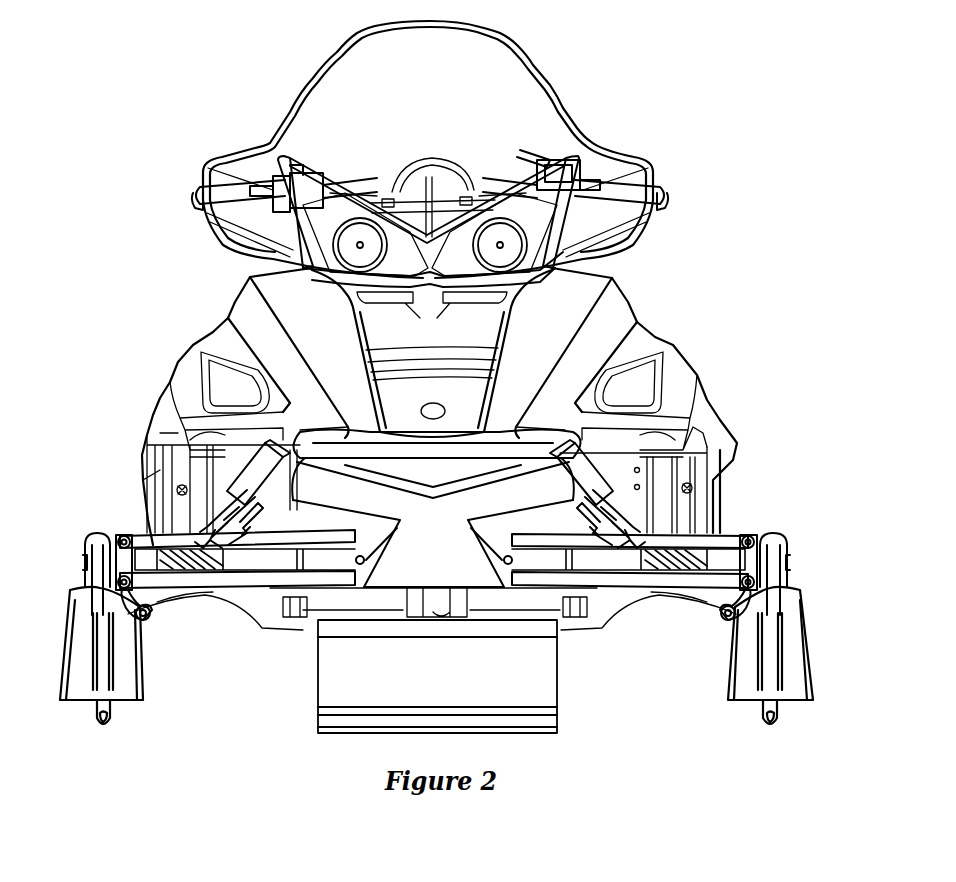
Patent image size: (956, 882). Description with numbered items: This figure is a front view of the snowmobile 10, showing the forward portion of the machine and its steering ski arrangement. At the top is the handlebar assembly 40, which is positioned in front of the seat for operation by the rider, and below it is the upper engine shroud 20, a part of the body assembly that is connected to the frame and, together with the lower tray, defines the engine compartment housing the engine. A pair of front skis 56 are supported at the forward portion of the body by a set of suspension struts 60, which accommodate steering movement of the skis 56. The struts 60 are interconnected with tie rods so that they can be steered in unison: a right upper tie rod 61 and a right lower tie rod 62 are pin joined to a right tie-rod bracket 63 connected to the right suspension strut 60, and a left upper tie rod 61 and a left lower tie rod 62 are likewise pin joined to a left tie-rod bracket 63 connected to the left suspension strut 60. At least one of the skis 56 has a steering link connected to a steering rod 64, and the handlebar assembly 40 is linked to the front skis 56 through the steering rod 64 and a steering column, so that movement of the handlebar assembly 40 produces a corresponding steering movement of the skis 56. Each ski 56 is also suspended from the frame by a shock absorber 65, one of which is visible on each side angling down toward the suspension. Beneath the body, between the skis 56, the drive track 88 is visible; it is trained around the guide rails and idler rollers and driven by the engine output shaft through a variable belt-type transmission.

The snowmobile 10 is at (437, 376).
The handlebar assembly 40 is at (660, 193).
The upper engine shroud 20 is at (612, 313).
The shock absorber 65 is at (258, 487).
The upper tie rod 61 is at (143, 533).
The lower tie rod 62 is at (187, 587).
The tie-rod bracket 63 is at (128, 563).
The suspension strut 60 is at (87, 568).
The front ski 56 is at (78, 613).
The steering rod 64 is at (280, 550).
The drive track 88 is at (550, 703).